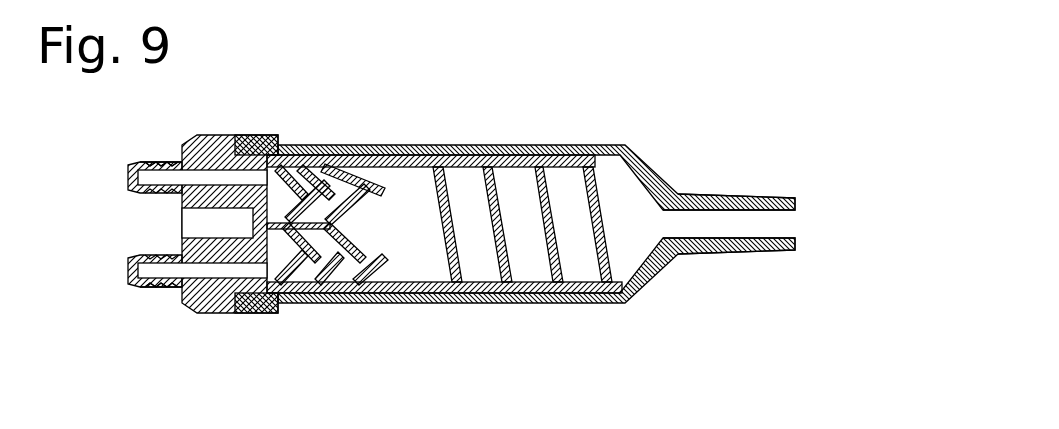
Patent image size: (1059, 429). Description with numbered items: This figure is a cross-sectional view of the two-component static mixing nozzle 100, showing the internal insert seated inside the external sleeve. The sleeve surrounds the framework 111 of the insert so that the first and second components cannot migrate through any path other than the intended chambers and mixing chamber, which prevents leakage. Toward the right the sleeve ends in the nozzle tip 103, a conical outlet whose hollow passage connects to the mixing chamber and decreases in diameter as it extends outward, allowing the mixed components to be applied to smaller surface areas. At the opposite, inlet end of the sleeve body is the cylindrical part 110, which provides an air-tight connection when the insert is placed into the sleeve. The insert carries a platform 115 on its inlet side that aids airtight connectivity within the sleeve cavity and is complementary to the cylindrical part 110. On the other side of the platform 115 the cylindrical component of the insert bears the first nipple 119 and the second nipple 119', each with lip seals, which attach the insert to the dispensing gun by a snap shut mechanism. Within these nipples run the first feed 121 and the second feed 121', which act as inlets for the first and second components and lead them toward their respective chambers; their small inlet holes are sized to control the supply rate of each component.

The static mixing nozzle 100 is at (645, 112).
The nozzle tip 103 is at (752, 222).
The cylindrical part 110 is at (259, 140).
The framework 111 is at (613, 282).
The platform 115 is at (250, 295).
The first nipple 119 is at (142, 318).
The second nipple 119' is at (146, 132).
The first feed 121 is at (160, 224).
The second feed 121' is at (154, 164).